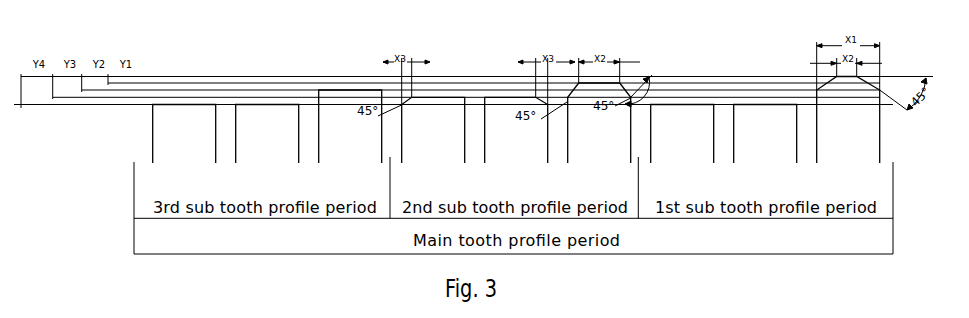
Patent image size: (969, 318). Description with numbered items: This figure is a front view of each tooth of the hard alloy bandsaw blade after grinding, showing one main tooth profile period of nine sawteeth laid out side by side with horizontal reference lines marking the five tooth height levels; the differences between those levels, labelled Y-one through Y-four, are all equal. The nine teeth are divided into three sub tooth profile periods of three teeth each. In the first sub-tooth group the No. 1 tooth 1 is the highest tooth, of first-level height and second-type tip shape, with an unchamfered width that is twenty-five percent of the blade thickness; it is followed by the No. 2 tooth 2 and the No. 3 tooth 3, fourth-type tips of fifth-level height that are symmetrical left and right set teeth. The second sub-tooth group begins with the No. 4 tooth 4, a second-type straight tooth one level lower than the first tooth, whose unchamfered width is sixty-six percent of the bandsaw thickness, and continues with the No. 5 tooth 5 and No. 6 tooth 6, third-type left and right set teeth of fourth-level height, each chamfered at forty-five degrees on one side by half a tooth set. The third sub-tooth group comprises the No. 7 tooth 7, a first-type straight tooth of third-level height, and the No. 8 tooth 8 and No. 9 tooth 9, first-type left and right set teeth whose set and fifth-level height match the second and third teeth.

The No. 1 tooth 1 is at (848, 129).
The No. 2 tooth 2 is at (765, 143).
The No. 3 tooth 3 is at (682, 143).
The No. 4 tooth 4 is at (599, 131).
The No. 5 tooth 5 is at (516, 138).
The No. 6 tooth 6 is at (433, 138).
The No. 7 tooth 7 is at (350, 135).
The No. 8 tooth 8 is at (267, 143).
The No. 9 tooth 9 is at (184, 143).